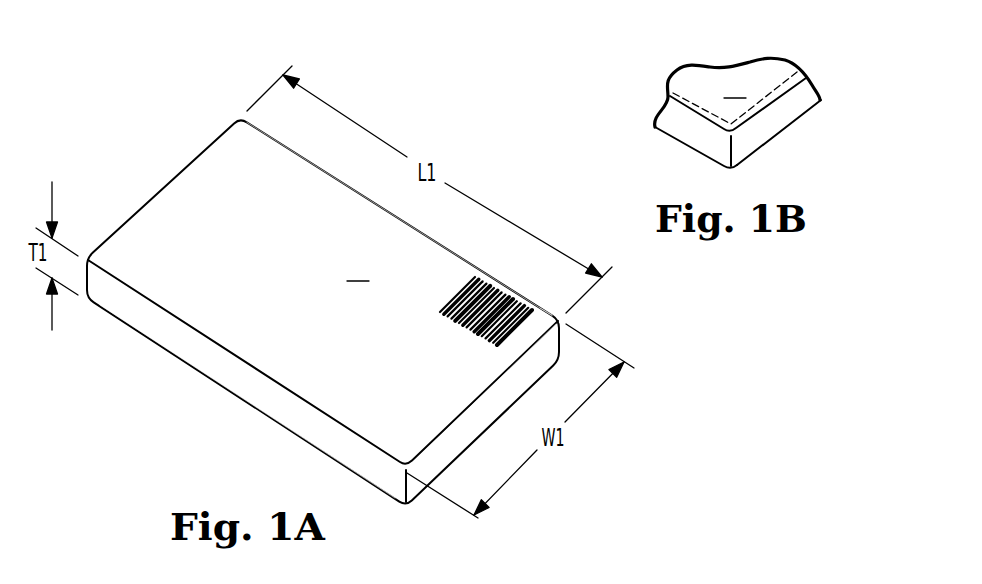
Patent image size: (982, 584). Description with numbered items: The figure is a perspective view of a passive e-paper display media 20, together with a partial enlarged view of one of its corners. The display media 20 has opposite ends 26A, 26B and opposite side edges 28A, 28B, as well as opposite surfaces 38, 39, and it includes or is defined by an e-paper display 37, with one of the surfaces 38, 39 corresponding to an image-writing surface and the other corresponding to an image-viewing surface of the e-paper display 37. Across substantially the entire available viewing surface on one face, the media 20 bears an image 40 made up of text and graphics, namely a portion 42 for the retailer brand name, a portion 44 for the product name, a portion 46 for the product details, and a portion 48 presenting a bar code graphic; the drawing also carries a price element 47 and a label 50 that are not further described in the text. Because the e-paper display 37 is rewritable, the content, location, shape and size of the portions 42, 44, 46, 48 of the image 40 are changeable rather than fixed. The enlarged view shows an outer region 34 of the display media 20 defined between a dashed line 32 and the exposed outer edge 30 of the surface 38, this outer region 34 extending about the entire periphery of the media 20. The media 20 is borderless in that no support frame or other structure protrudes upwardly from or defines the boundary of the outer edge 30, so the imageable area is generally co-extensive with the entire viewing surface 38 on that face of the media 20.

In FIG. 1A, the display media 20 is at (174, 146).
In FIG. 1B, the display media 20 is at (734, 50).
In FIG. 1A, the end 26A is at (160, 189).
In FIG. 1A, the end 26B is at (493, 412).
In FIG. 1B, the end 26B is at (777, 119).
In FIG. 1A, the side edge 28A is at (325, 170).
In FIG. 1A, the side edge 28B is at (130, 311).
In FIG. 1B, the side edge 28B is at (678, 125).
In FIG. 1B, the outer edge 30 is at (713, 126).
In FIG. 1B, the dashed line 32 is at (692, 92).
In FIG. 1B, the outer region 34 is at (670, 90).
In FIG. 1A, the e-paper display 37 is at (276, 432).
In FIG. 1A, the surface 38 is at (455, 272).
In FIG. 1A, the surface 39 is at (338, 463).
In FIG. 1A, the image 40 is at (233, 133).
In FIG. 1A, the portion 42 is at (410, 227).
In FIG. 1A, the portion 44 is at (185, 216).
In FIG. 1A, the portion 46 is at (150, 253).
In FIG. 1A, the price 47 is at (390, 360).
In FIG. 1A, the portion 48 is at (528, 301).
In FIG. 1A, the e-paper display 50 is at (358, 269).
In FIG. 1B, the e-paper display 50 is at (735, 86).